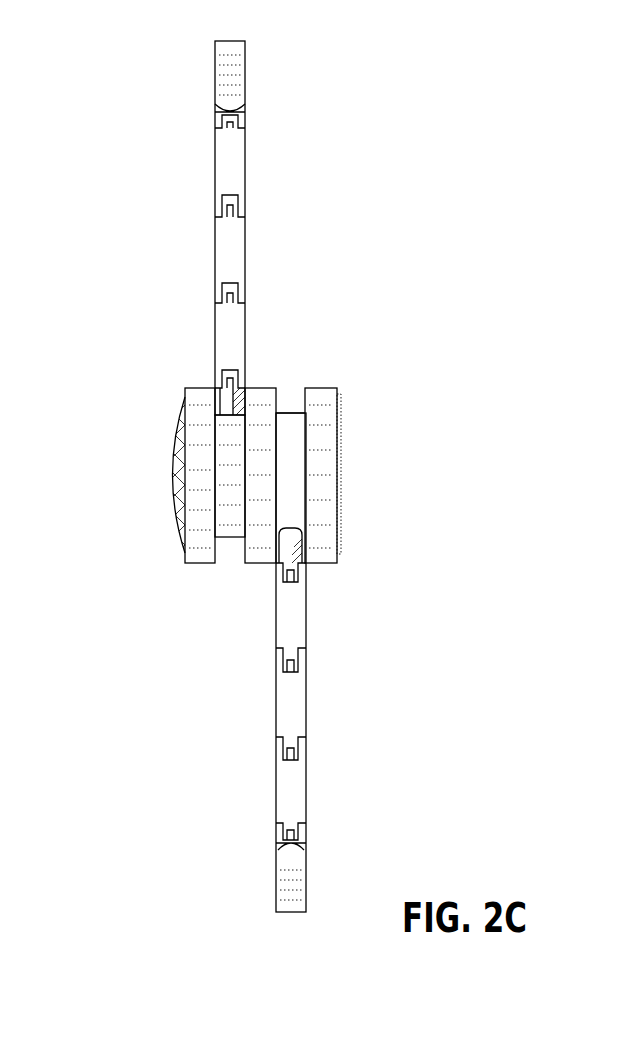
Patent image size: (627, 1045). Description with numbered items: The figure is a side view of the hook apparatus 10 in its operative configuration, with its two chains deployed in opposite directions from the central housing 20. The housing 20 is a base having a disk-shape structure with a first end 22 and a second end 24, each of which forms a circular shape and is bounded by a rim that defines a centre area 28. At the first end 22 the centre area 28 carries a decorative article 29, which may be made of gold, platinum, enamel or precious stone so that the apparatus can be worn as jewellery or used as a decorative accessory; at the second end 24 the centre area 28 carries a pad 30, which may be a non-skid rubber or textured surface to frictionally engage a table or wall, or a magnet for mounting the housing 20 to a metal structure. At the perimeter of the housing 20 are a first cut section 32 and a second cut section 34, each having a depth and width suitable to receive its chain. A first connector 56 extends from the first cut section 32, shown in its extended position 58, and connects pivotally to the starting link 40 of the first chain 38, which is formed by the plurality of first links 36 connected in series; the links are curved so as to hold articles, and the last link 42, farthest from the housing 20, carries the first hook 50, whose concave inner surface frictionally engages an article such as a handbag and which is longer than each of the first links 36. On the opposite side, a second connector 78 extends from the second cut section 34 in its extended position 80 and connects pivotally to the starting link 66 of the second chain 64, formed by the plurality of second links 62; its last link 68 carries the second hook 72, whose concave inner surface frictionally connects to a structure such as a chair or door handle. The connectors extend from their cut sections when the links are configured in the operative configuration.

The hook apparatus 10 is at (256, 476).
The housing 20 is at (256, 479).
The first end 22 is at (118, 479).
The second end 24 is at (398, 475).
The centre area 28 is at (145, 479).
The decorative article 29 is at (166, 472).
The pad 30 is at (338, 490).
The first cut section 32 is at (292, 438).
The second cut section 34 is at (218, 482).
The plurality of first links 36 is at (282, 662).
The first chain 38 is at (282, 662).
The starting link 40 is at (282, 637).
The last link 42 is at (295, 797).
The first hook 50 is at (290, 878).
The first connector 56 is at (232, 569).
The extended position 58 is at (288, 550).
The plurality of second links 62 is at (223, 228).
The second chain 64 is at (223, 228).
The starting link 66 is at (230, 338).
The last link 68 is at (222, 178).
The second hook 72 is at (236, 75).
The second connector 78 is at (172, 389).
The extended position 80 is at (228, 405).